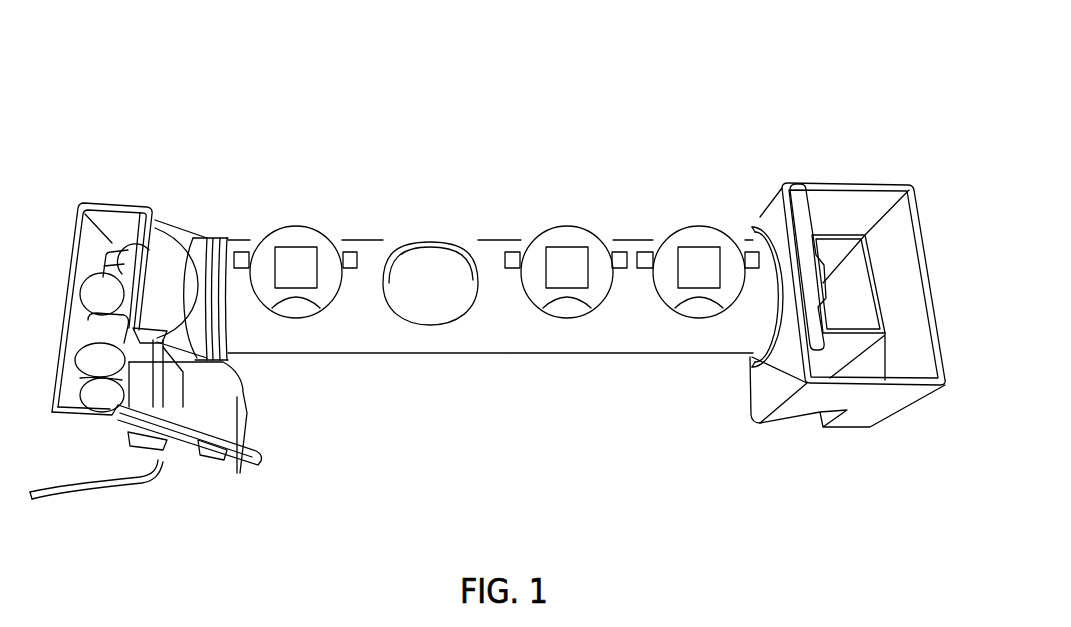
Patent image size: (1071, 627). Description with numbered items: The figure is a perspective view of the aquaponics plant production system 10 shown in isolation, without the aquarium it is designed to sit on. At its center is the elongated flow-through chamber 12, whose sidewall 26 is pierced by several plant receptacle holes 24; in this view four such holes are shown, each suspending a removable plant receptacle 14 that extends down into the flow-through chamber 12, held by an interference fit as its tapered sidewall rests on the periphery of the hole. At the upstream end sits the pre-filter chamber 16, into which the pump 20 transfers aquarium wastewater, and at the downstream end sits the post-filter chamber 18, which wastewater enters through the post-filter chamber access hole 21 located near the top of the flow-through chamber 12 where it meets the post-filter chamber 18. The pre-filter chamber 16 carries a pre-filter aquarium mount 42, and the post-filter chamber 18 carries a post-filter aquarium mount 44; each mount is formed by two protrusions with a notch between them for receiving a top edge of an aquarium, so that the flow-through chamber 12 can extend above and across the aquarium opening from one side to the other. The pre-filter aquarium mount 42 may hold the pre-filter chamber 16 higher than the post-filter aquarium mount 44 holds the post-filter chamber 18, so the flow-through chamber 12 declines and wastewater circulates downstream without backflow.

The aquaponics plant production system 10 is at (653, 137).
The flow-through chamber 12 is at (528, 332).
The removable plant receptacles 14 is at (297, 237).
The pre-filter chamber 16 is at (110, 225).
The post-filter chamber 18 is at (843, 205).
The pump 20 is at (240, 462).
The post-filter chamber access hole 21 is at (60, 488).
The plant receptacle holes 24 is at (416, 314).
The sidewall 26 is at (494, 229).
The pre-filter aquarium mount 42 is at (178, 467).
The post-filter aquarium mount 44 is at (829, 447).